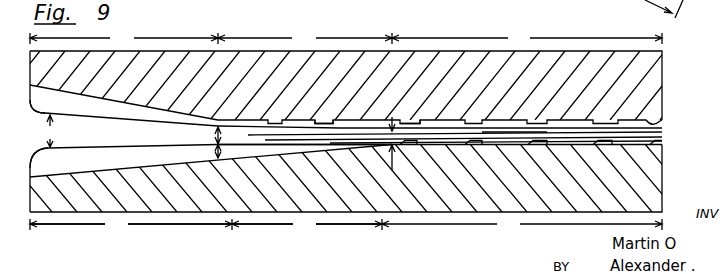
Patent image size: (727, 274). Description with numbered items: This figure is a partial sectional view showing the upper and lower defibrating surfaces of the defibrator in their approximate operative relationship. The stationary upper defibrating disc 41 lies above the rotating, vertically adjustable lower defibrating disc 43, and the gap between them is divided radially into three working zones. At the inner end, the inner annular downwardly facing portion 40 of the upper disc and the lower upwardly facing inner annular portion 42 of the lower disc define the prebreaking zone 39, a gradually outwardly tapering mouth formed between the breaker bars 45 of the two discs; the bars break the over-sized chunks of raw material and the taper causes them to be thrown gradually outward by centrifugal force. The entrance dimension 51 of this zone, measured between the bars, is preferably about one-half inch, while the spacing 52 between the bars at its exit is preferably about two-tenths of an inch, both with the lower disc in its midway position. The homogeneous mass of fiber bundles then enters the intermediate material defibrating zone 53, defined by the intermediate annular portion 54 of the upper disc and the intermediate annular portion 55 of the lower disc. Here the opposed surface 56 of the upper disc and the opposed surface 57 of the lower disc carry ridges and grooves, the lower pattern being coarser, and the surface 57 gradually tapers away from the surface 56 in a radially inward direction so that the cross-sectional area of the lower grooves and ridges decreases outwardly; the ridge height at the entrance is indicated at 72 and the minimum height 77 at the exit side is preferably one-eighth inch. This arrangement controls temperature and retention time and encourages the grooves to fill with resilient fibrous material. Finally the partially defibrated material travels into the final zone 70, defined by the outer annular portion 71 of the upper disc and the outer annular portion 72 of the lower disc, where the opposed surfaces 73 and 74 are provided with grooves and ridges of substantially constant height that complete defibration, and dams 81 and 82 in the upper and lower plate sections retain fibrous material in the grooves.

The prebreaking zone 39 is at (68, 135).
The inner annular downwardly facing portion of the upper defibrating disc 40 is at (124, 39).
The upper defibrating disc 41 is at (648, 83).
The lower upwardly facing inner annular portion of the lower defibrating disc 42 is at (131, 225).
The lower defibrating disc 43 is at (655, 170).
The breaker bars 45 is at (103, 156).
The entrance dimension of the prebreaking zone 51 is at (49, 131).
The spacing between the bars at the exit portion of the prebreaking zone 52 is at (215, 135).
The intermediate material defibrating zone 53 is at (256, 135).
The intermediate annular portion of the upper defibrating disc 54 is at (305, 39).
The intermediate annular portion of the lower defibrating disc 55 is at (307, 225).
The opposed surface of the upper disc 56 is at (317, 119).
The opposed surface of the lower disc 57 is at (277, 146).
The final zone 70 is at (508, 134).
The outer annular portion of the upper defibrating disc 71 is at (527, 39).
The outer annular portion of the lower defibrating disc 72 is at (215, 153).
The opposed surface of the upper disc in the final zone 73 is at (650, 127).
The opposed surface of the lower disc in the final zone 74 is at (650, 135).
The minimum height of the ridges at the exit side of the intermediate zone 77 is at (392, 170).
The dam in the upper plate section 81 is at (427, 120).
The dam in the lower plate section 82 is at (476, 149).